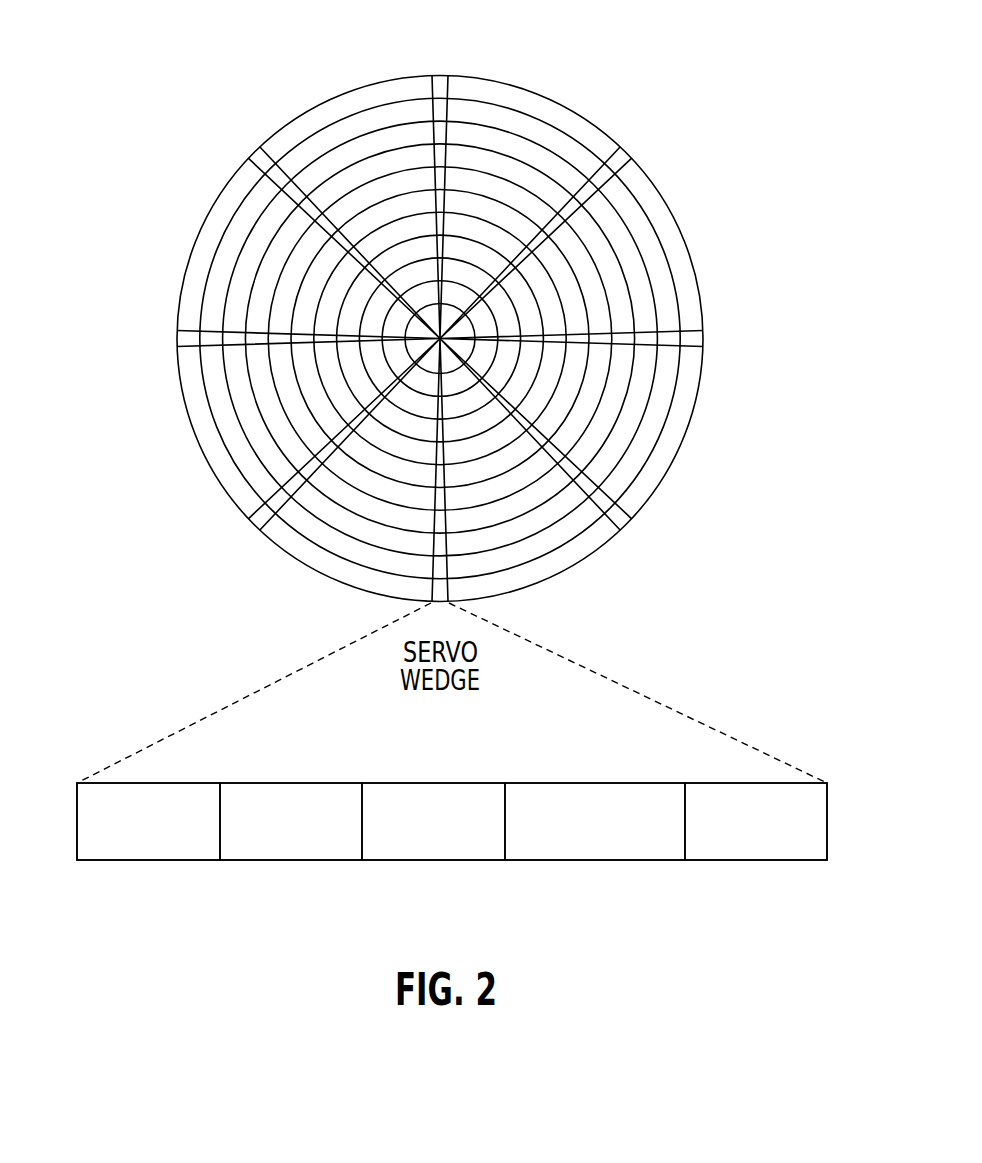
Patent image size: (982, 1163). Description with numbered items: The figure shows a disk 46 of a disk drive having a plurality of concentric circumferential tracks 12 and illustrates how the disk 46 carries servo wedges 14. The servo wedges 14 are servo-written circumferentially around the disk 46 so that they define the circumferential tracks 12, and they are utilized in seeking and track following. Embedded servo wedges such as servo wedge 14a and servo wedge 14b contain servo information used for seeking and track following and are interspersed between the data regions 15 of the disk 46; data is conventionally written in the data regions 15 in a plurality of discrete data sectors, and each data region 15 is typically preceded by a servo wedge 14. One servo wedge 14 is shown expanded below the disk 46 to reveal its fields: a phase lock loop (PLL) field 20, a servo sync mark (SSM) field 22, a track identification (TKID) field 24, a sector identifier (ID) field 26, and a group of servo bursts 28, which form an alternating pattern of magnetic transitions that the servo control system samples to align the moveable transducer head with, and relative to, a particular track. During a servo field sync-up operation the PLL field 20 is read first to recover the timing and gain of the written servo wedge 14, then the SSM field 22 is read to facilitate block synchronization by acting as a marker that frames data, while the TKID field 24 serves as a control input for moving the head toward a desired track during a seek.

The disk 46 is at (271, 49).
The circumferential tracks 12 is at (219, 236).
The servo wedges 14 is at (441, 82).
The embedded servo wedge 14a is at (256, 158).
The embedded servo wedge 14b is at (183, 340).
The data regions 15 is at (507, 116).
The phase lock loop (PLL) field 20 is at (102, 861).
The servo sync mark (SSM) field 22 is at (243, 861).
The track identification (TKID) field 24 is at (388, 861).
The sector identifier (ID) field 26 is at (535, 861).
The servo bursts 28 is at (710, 861).